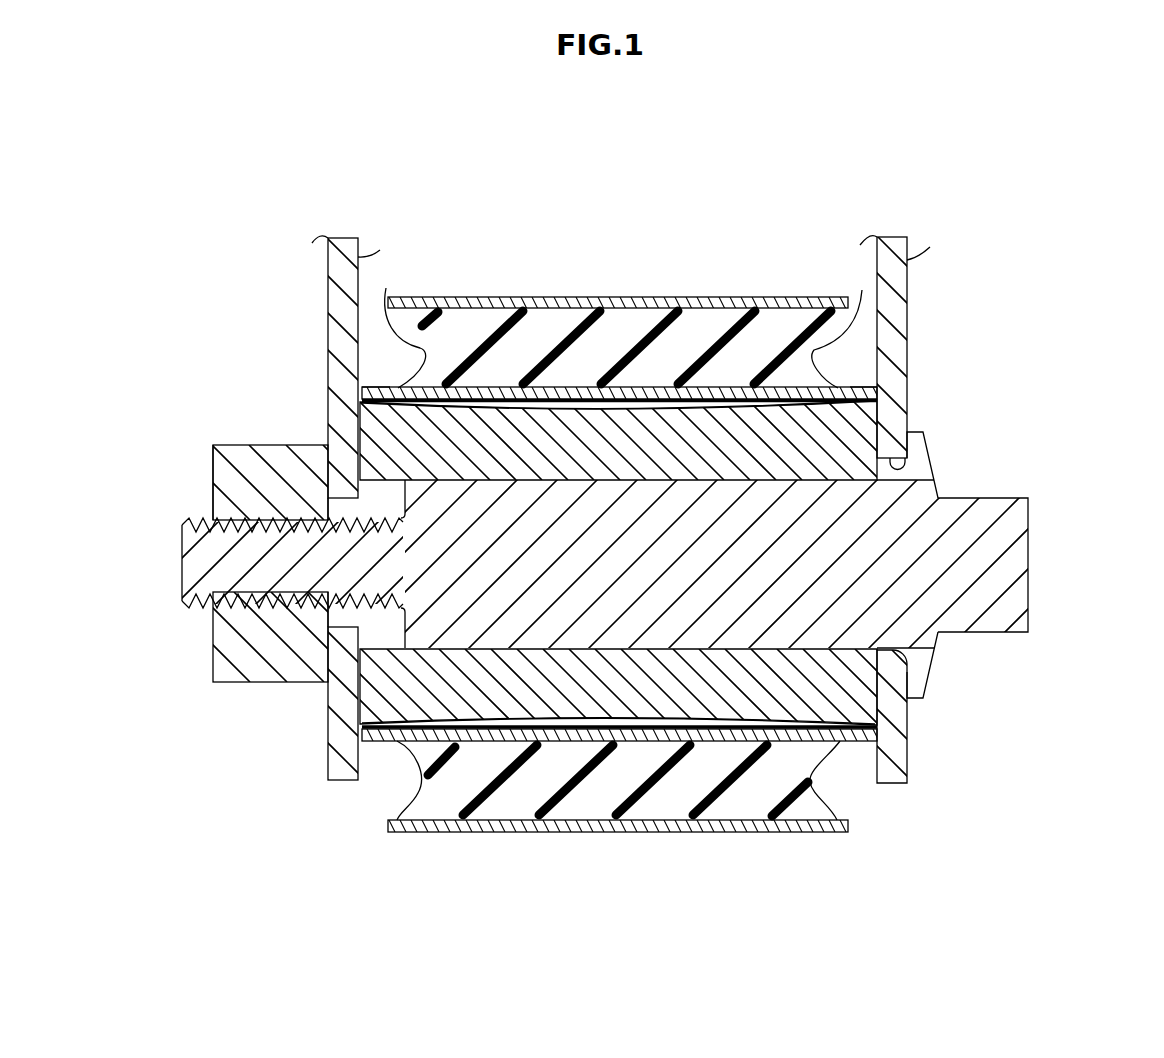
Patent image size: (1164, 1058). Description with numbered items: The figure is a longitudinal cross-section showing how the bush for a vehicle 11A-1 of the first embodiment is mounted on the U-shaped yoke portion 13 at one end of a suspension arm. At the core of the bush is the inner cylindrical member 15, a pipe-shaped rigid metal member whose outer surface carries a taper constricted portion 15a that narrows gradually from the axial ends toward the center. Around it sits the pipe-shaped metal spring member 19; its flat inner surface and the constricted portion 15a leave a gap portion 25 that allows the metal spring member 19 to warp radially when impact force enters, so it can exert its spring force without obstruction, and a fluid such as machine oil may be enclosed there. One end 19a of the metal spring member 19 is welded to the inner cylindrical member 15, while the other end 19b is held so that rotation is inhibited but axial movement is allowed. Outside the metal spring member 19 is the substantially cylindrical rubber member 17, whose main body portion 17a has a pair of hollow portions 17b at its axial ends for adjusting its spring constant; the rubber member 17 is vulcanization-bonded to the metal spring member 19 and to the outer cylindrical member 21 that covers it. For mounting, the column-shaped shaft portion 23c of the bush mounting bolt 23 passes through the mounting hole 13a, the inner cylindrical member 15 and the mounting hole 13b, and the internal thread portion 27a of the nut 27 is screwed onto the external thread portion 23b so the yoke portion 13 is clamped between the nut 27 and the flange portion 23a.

The bush for a vehicle 11A-1 is at (827, 153).
The yoke portion 13 is at (332, 347).
The mounting hole 13a is at (877, 480).
The mounting hole 13b is at (327, 507).
The inner cylindrical member 15 is at (613, 458).
The taper constricted portion 15a is at (570, 413).
The rubber member 17 is at (542, 323).
The main body portion 17a is at (680, 334).
The hollow portions 17b is at (386, 288).
The metal spring member 19 is at (750, 387).
The one end 19a is at (877, 415).
The other end 19b is at (360, 392).
The outer cylindrical member 21 is at (640, 301).
The bush mounting bolt 23 is at (1020, 553).
The flange portion 23a is at (923, 682).
The external thread portion 23b is at (238, 565).
The shaft portion 23c is at (605, 573).
The gap portion 25 is at (633, 387).
The nut 27 is at (232, 462).
The internal thread portion 27a is at (213, 485).